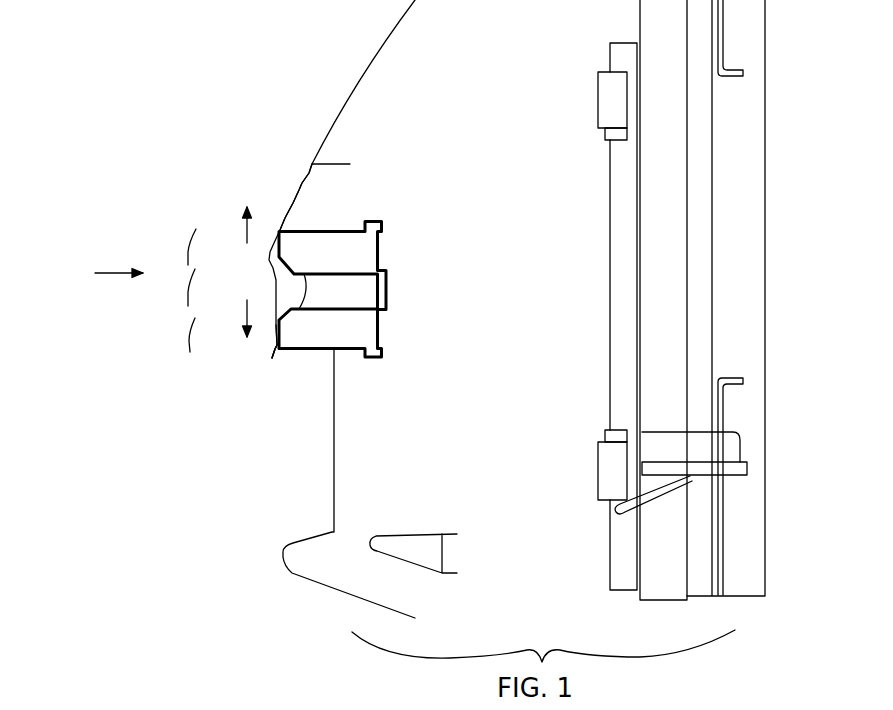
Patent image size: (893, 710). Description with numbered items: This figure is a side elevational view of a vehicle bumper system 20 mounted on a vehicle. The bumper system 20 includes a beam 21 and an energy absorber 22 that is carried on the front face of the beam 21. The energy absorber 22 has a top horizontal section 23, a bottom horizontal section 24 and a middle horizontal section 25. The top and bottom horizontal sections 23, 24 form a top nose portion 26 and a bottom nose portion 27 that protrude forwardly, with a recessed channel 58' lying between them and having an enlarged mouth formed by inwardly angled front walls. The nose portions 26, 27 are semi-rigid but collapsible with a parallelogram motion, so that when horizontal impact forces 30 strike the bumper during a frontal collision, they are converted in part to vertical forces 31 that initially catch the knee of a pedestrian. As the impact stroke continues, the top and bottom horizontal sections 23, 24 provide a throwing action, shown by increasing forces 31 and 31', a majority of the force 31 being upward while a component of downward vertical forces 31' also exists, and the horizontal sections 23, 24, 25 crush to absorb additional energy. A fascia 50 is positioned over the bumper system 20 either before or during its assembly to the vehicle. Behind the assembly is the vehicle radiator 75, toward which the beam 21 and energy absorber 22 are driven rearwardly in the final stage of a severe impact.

The vehicle bumper system 20 is at (185, 375).
The beam 21 is at (393, 268).
The energy absorber 22 is at (267, 357).
The top horizontal section 23 is at (187, 251).
The bottom horizontal section 24 is at (190, 340).
The middle horizontal section 25 is at (188, 290).
The top nose portion 26 is at (292, 228).
The bottom nose portion 27 is at (293, 355).
The horizontal impact forces 30 is at (118, 272).
The vertical forces 31 is at (230, 213).
The downward vertical forces 31' is at (227, 327).
The fascia 50 is at (333, 468).
The channel 58' is at (262, 261).
The vehicle radiator 75 is at (610, 337).